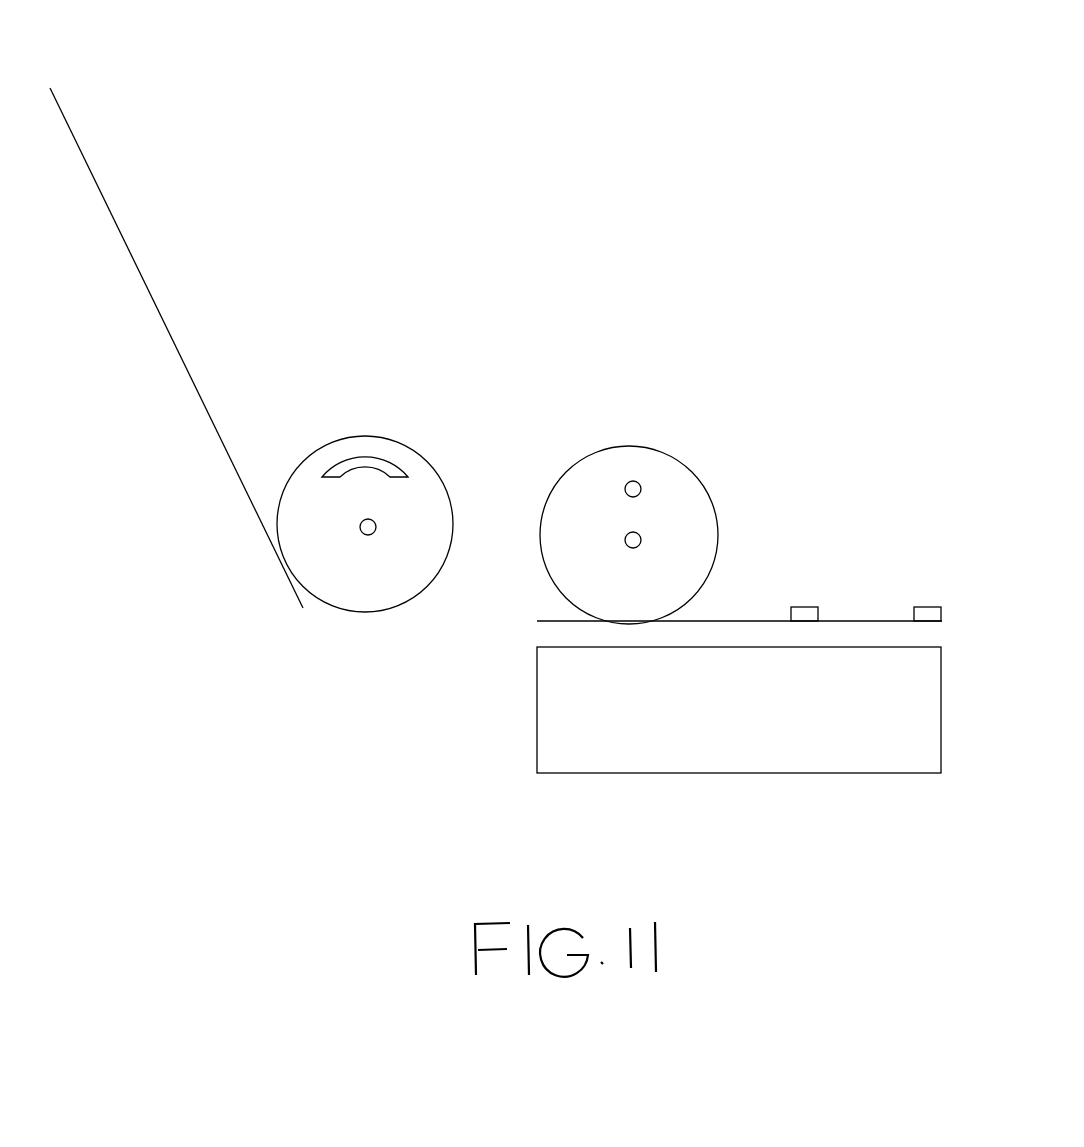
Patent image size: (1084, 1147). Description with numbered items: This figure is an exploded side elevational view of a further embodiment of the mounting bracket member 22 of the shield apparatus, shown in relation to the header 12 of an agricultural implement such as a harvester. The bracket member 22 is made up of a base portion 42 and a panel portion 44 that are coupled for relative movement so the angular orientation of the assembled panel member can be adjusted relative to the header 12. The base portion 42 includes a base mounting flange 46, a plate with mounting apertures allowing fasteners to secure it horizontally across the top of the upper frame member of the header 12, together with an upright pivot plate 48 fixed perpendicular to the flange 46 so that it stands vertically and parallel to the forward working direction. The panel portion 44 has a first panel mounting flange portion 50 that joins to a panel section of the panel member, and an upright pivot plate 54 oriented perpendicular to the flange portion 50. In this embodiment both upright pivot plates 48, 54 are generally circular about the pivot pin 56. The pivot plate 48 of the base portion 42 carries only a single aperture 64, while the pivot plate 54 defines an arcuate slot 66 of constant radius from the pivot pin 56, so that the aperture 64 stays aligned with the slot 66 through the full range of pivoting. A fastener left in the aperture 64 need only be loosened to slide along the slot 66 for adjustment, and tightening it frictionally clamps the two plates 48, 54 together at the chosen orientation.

The header 12 is at (762, 757).
The bracket member 22 is at (550, 81).
The base portion 42 is at (763, 390).
The panel portion 44 is at (250, 272).
The base mounting flange 46 is at (843, 619).
The upright pivot plate 48 is at (705, 508).
The first panel mounting flange portion 50 is at (178, 353).
The upright pivot plate 54 is at (365, 585).
The pivot pin 56 is at (377, 527).
The single aperture 64 is at (638, 482).
The arcuate slot 66 is at (345, 460).